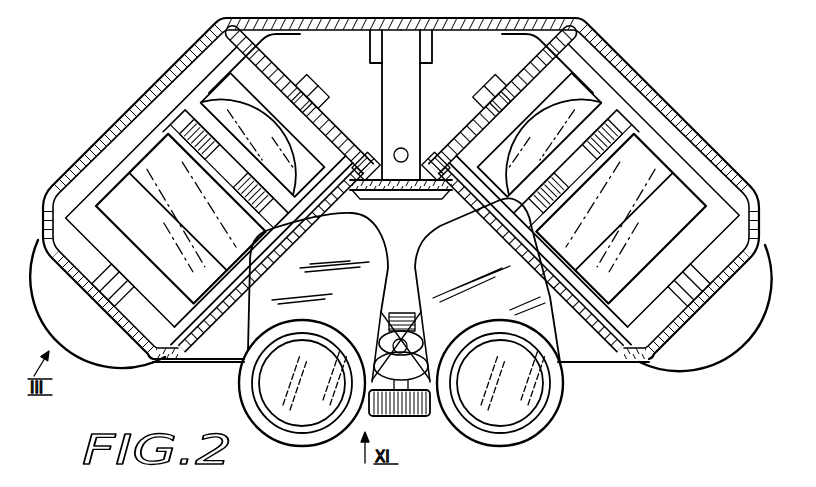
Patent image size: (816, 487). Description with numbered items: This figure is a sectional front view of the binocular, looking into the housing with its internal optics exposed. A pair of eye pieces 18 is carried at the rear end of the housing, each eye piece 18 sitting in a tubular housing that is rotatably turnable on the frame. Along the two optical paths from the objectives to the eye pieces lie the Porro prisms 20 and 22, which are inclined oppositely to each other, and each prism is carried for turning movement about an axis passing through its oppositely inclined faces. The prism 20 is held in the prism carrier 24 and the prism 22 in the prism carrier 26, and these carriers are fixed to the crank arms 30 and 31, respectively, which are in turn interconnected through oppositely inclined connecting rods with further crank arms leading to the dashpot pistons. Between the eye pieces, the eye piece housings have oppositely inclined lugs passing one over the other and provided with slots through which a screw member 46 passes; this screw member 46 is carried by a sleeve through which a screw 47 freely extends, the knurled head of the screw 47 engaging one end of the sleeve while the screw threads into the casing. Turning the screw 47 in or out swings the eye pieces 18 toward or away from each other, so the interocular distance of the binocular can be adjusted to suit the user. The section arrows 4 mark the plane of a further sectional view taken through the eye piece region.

The eye piece 18 is at (530, 407).
The Porro prism 20 is at (147, 169).
The Porro prism 22 is at (654, 167).
The prism carrier 24 is at (143, 140).
The prism carrier 26 is at (632, 125).
The crank arm 30 is at (322, 134).
The crank arm 31 is at (486, 136).
The screw member 46 is at (406, 340).
The screw 47 is at (414, 414).
The section line 4- 4 is at (460, 215).